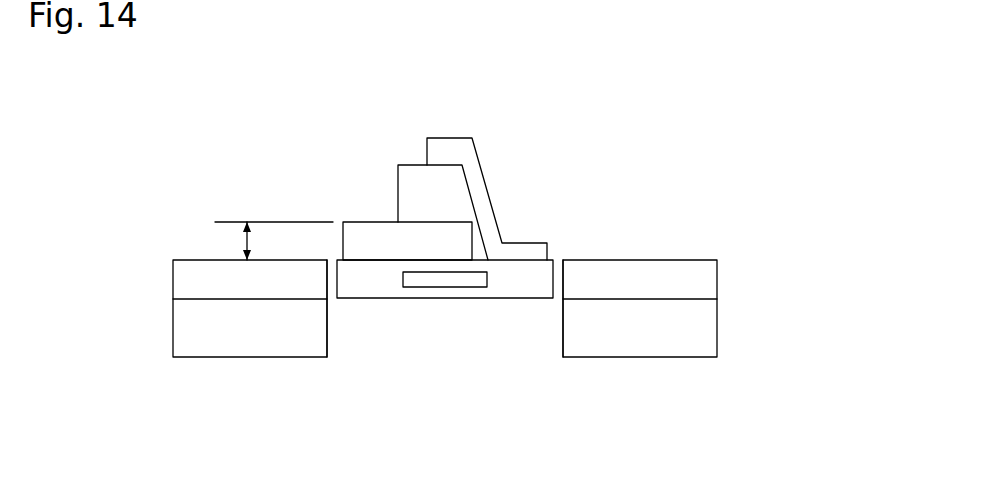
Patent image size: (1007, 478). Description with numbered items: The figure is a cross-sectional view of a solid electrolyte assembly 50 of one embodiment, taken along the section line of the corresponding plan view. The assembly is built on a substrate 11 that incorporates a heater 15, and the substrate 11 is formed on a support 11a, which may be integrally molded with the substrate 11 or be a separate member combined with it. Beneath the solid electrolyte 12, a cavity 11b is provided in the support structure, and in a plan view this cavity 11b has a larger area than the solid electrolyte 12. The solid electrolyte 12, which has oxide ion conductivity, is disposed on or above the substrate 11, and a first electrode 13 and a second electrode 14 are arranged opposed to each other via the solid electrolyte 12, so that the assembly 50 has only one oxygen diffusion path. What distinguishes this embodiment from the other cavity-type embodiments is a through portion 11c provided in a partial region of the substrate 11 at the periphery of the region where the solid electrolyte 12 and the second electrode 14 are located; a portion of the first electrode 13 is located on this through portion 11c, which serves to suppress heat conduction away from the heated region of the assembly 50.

The solid electrolyte assembly 50 is at (789, 97).
The substrate 11 is at (707, 280).
The support 11a is at (707, 328).
The cavity 11b is at (509, 331).
The through portion 11c is at (333, 262).
The solid electrolyte 12 is at (398, 166).
The first electrode 13 is at (367, 226).
The second electrode 14 is at (473, 148).
The heater 15 is at (490, 279).